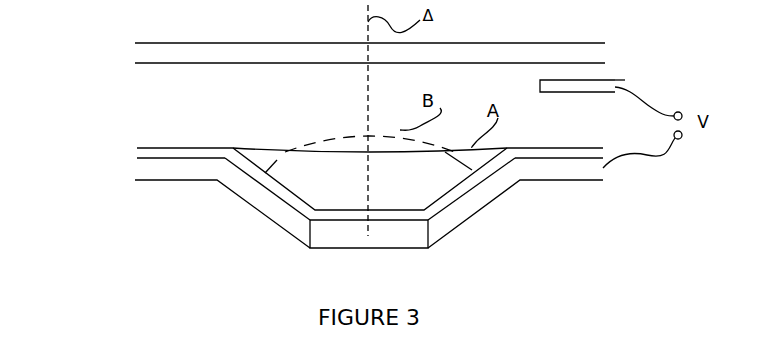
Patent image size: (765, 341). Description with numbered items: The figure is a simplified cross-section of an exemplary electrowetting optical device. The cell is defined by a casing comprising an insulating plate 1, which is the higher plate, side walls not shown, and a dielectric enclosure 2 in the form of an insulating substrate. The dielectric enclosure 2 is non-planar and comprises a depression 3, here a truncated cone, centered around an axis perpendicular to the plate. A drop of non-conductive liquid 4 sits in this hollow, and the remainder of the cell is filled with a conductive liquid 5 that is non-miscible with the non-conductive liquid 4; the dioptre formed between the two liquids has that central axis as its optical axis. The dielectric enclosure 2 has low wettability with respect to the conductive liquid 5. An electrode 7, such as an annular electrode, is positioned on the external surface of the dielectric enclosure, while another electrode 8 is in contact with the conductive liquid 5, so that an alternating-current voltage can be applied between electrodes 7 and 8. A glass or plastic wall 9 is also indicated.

The insulating plate 1 is at (472, 53).
The dielectric enclosure 2 is at (134, 155).
The depression 3 is at (292, 175).
The non-conductive liquid 4 is at (328, 172).
The conductive liquid 5 is at (262, 78).
The electrode 7 is at (167, 168).
The electrode 8 is at (605, 82).
The glass or plastic wall 9 is at (398, 228).